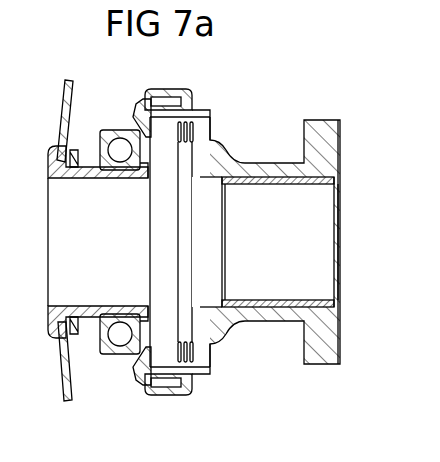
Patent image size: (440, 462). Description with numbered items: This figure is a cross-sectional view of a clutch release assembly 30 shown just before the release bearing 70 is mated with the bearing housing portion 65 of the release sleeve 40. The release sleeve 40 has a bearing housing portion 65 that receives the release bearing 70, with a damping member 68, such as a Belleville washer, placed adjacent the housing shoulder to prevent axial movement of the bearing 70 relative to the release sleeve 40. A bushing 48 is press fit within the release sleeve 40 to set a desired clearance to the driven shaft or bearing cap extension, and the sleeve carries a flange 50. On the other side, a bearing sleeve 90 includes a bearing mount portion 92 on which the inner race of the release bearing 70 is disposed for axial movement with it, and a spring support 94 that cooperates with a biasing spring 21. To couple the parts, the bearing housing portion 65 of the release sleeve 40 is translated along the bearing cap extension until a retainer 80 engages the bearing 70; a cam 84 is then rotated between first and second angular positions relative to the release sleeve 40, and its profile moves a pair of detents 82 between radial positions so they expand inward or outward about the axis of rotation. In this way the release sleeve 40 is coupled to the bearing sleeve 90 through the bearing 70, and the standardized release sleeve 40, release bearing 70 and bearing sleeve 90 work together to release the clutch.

The biasing spring 21 is at (68, 97).
The hub assembly 30 is at (206, 85).
The release sleeve 40 is at (280, 135).
The bushing 48 is at (302, 184).
The flange face 50 is at (350, 114).
The bearing housing portion 65 is at (195, 108).
The damping member 68 is at (198, 133).
The release bearing 70 is at (108, 372).
The retainer 80 is at (130, 102).
The detents 82 is at (135, 378).
The cam 84 is at (173, 97).
The bearing sleeve 90 is at (66, 296).
The bearing mount portion 92 is at (150, 180).
The spring support 94 is at (56, 187).